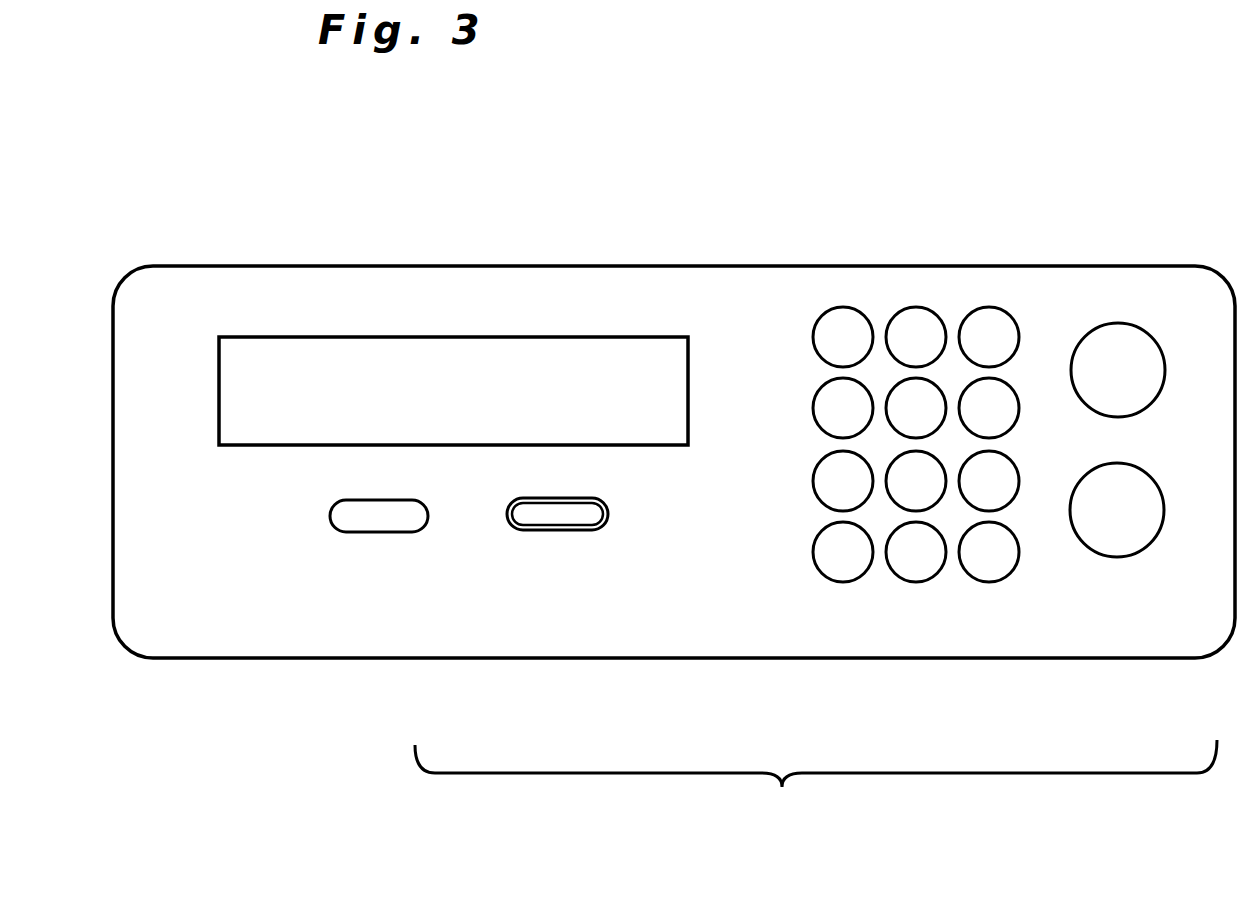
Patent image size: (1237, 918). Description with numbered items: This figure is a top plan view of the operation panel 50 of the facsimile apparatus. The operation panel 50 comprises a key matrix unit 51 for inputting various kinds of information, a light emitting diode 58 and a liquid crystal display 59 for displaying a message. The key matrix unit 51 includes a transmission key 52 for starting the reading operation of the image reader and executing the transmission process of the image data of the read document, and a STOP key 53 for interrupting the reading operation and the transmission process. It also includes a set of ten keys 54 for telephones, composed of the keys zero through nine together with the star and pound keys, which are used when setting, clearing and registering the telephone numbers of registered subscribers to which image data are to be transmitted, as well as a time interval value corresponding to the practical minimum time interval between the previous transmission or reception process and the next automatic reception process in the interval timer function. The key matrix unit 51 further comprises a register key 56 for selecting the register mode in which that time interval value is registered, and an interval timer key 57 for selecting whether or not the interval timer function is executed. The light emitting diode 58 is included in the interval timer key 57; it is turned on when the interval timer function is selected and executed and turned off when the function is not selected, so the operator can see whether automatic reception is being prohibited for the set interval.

The operation panel 50 is at (683, 89).
The key matrix unit 51 is at (816, 789).
The transmission (TR) key 52 is at (1110, 540).
The STOP key 53 is at (1150, 397).
The set of ten keys 54 is at (793, 583).
The register key 56 is at (428, 520).
The interval timer key 57 is at (614, 518).
The light emitting diode (LED) 58 is at (577, 513).
The liquid crystal display (LCD) 59 is at (583, 336).